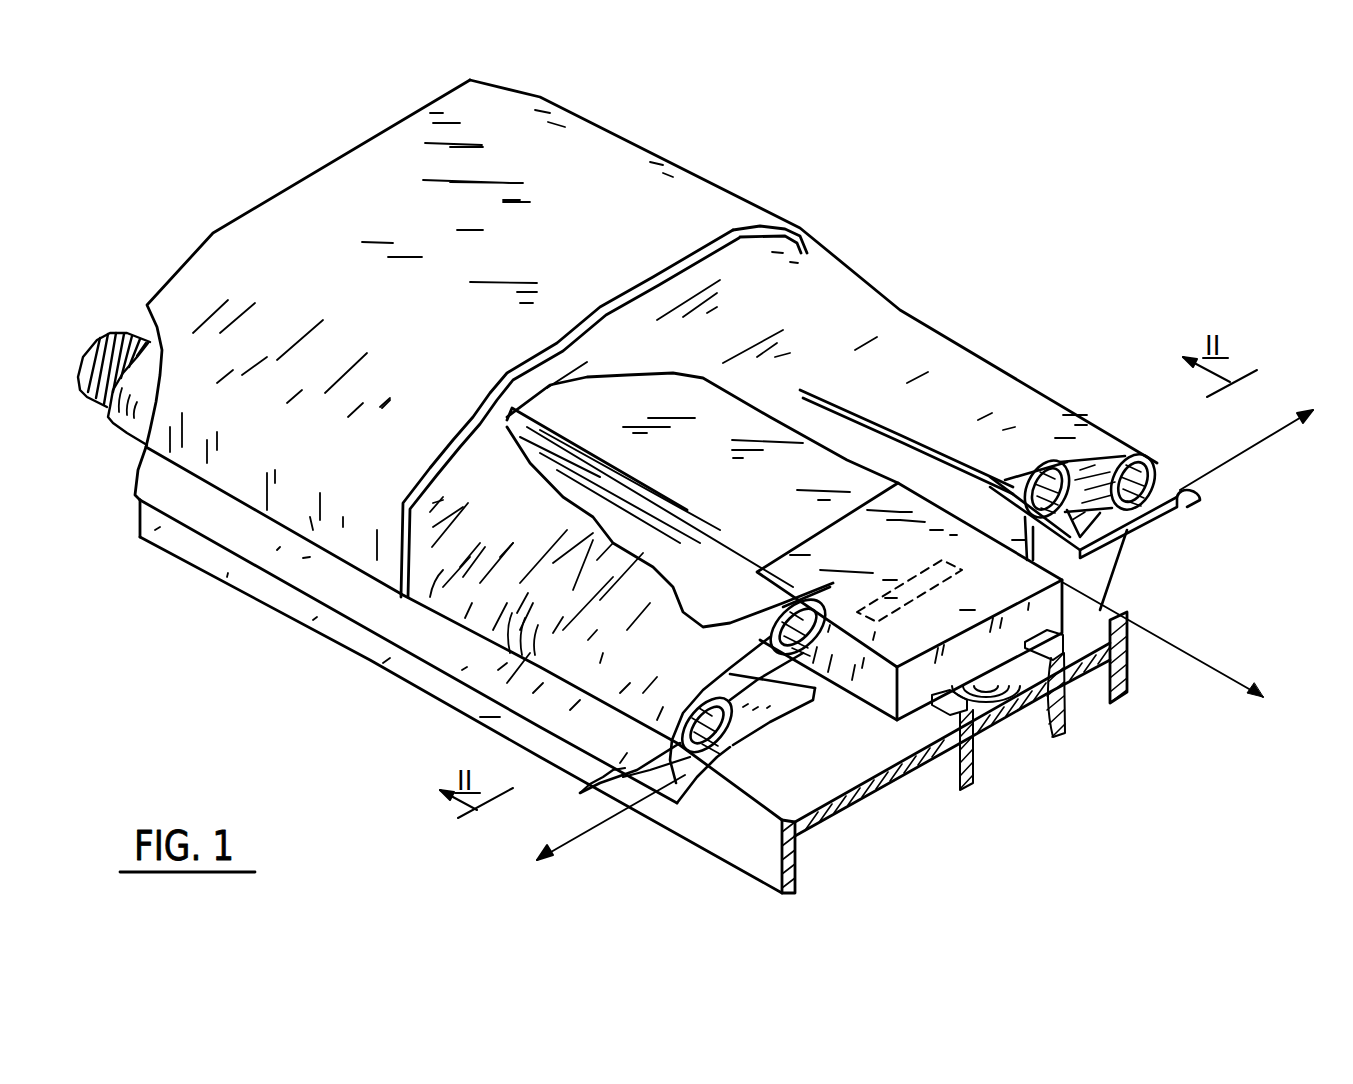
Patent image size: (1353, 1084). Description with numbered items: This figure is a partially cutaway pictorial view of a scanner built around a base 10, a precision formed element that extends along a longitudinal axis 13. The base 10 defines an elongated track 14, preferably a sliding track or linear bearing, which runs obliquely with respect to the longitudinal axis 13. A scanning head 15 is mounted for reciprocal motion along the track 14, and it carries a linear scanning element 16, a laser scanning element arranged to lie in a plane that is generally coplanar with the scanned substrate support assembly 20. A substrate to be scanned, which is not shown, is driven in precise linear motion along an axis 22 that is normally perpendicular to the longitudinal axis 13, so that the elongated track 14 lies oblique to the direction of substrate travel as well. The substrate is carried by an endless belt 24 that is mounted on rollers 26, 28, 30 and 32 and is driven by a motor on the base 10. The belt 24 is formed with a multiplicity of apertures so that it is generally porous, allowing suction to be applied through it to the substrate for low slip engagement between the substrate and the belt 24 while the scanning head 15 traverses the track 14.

The base 10 is at (1123, 697).
The longitudinal axis 13 is at (1193, 653).
The elongated track 14 is at (693, 483).
The scanning head 15 is at (1022, 577).
The linear scanning element 16 is at (960, 566).
The scanned substrate support assembly 20 is at (720, 762).
The axis 22 is at (1270, 443).
The endless belt 24 is at (1107, 447).
The roller 26 is at (1073, 457).
The roller 28 is at (1153, 473).
The roller 30 is at (623, 770).
The roller 32 is at (767, 633).